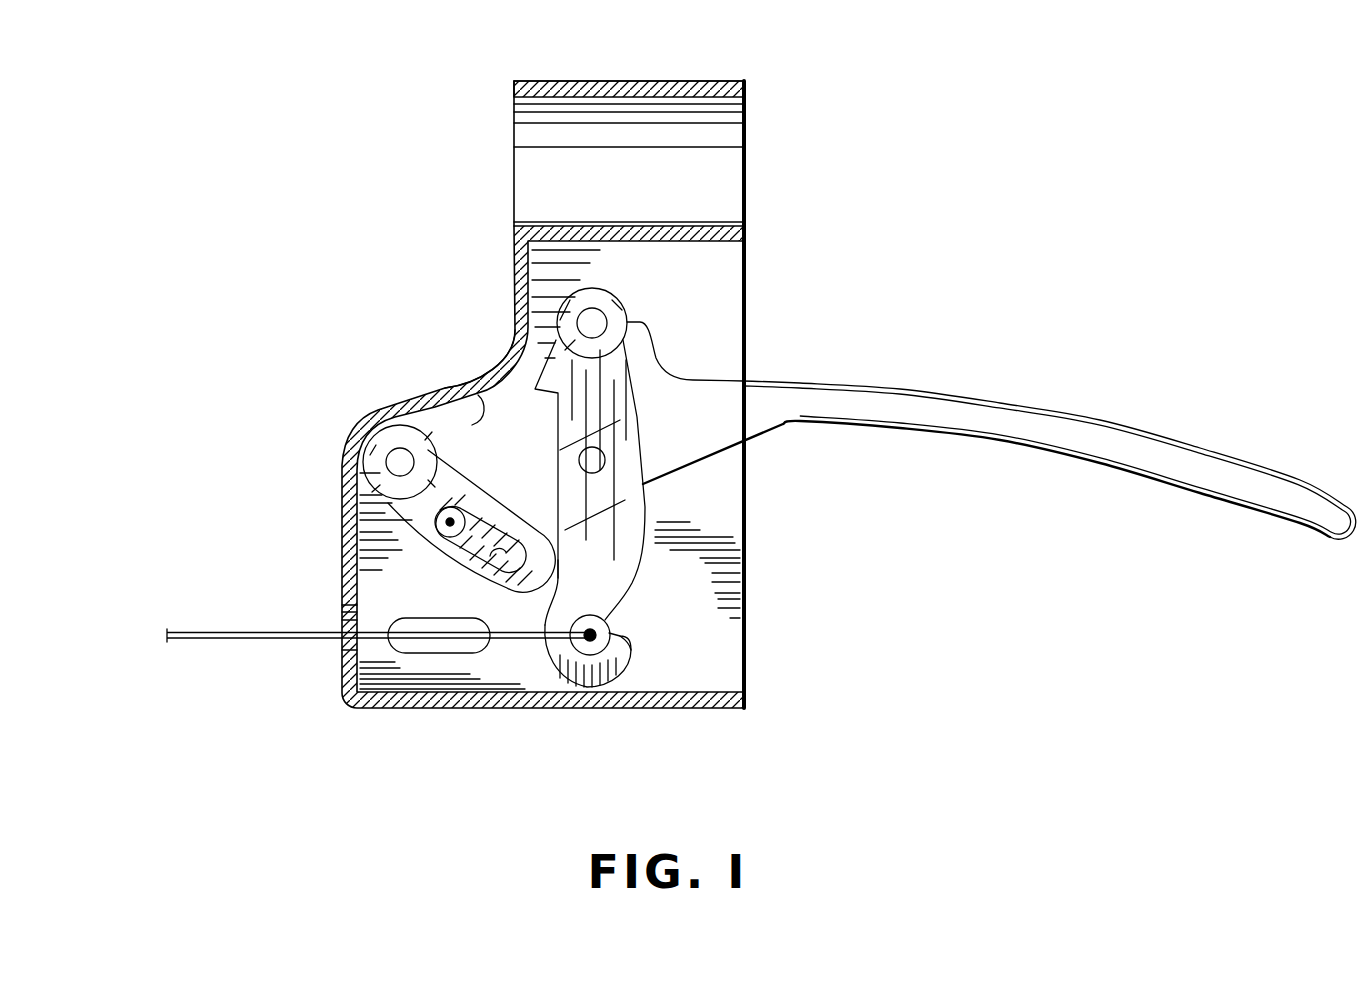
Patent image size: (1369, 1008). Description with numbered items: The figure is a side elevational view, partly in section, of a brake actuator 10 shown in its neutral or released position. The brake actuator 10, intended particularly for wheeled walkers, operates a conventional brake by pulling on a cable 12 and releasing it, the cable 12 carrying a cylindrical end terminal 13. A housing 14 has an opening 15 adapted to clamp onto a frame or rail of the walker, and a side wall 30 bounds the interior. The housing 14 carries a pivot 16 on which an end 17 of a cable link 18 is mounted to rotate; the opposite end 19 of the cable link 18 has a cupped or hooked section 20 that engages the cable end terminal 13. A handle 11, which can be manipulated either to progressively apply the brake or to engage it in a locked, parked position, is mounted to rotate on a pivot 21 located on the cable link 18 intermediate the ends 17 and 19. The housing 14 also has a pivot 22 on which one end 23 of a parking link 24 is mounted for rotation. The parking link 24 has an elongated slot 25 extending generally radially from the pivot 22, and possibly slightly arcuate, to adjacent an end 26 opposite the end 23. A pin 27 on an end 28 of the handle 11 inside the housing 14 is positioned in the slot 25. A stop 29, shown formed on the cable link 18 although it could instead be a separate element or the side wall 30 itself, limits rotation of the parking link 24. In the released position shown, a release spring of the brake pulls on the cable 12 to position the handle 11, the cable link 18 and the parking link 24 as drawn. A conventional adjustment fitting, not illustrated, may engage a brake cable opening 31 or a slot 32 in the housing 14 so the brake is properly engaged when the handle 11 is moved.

The brake actuator 10 is at (902, 294).
The handle 11 is at (1197, 453).
The cable 12 is at (200, 640).
The cable end terminal 13 is at (607, 619).
The housing 14 is at (643, 708).
The opening 15 is at (720, 104).
The pivot 16 is at (602, 318).
The end of cable link 17 is at (593, 290).
The cable link 18 is at (645, 507).
The opposite end of cable link 19 is at (560, 690).
The hooked section 20 is at (622, 643).
The pivot 21 is at (603, 449).
The pivot 22 is at (400, 450).
The end of parking link 23 is at (378, 437).
The parking link 24 is at (403, 503).
The elongated slot 25 is at (500, 573).
The end of parking link 26 is at (560, 578).
The pin 27 is at (448, 483).
The end of handle 28 is at (447, 532).
The stop 29 is at (497, 385).
The side wall 30 is at (461, 424).
The brake cable opening 31 is at (350, 647).
The slot 32 is at (415, 645).